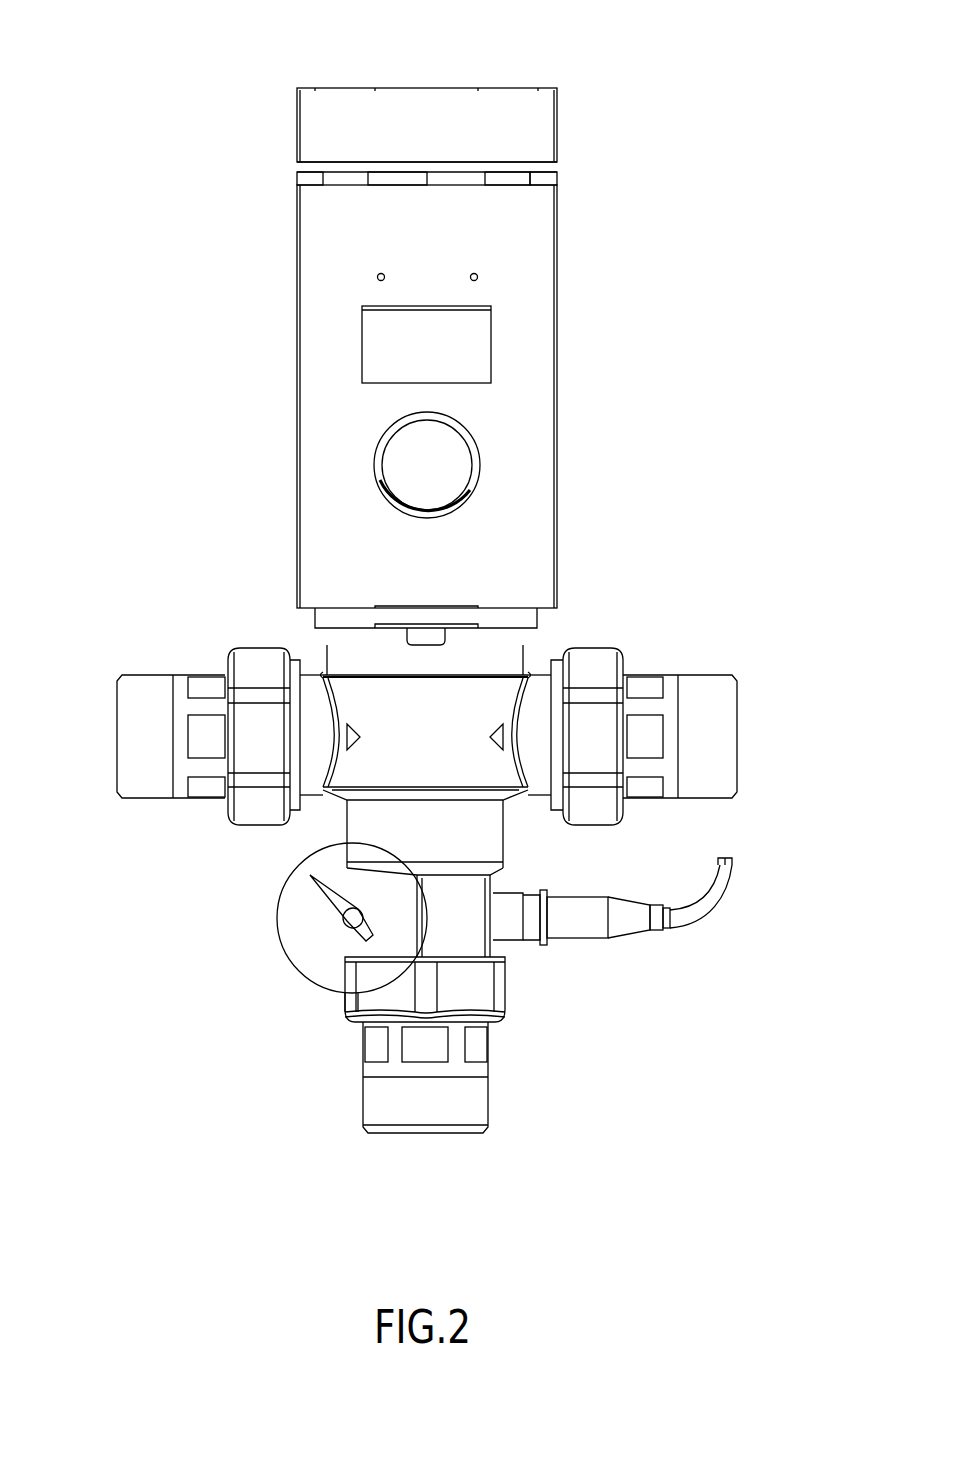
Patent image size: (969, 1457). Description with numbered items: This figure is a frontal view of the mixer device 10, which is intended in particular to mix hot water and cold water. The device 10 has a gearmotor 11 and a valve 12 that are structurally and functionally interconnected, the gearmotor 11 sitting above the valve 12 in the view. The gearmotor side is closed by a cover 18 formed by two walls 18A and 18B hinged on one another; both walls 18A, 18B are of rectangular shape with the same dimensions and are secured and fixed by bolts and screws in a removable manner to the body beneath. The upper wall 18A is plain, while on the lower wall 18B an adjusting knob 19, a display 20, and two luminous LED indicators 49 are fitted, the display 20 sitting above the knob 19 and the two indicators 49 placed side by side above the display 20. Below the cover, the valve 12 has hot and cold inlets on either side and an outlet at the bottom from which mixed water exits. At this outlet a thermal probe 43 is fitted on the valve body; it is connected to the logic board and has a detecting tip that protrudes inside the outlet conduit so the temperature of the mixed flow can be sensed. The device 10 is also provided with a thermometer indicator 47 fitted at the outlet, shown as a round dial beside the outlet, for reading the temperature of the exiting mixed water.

The mixer device 10 is at (735, 72).
The gearmotor 11 is at (170, 375).
The valve 12 is at (165, 906).
The cover 18 is at (585, 152).
The wall 18A is at (430, 88).
The wall 18B is at (462, 253).
The adjusting knob 19 is at (443, 479).
The display 20 is at (443, 360).
The thermal probe 43 is at (572, 921).
The thermometer indicator 47 is at (320, 950).
The luminous LED indicators 49 is at (372, 276).